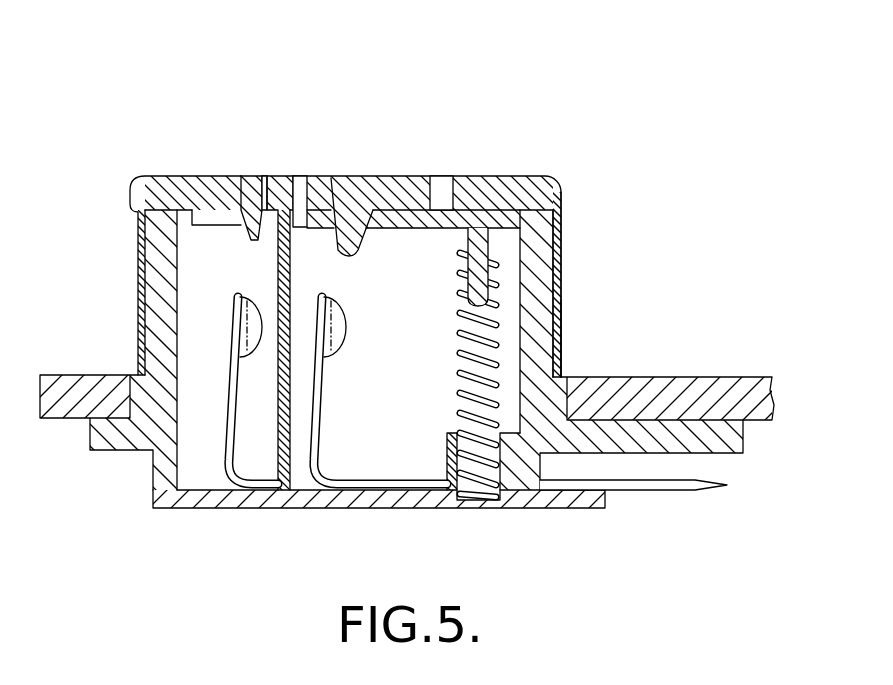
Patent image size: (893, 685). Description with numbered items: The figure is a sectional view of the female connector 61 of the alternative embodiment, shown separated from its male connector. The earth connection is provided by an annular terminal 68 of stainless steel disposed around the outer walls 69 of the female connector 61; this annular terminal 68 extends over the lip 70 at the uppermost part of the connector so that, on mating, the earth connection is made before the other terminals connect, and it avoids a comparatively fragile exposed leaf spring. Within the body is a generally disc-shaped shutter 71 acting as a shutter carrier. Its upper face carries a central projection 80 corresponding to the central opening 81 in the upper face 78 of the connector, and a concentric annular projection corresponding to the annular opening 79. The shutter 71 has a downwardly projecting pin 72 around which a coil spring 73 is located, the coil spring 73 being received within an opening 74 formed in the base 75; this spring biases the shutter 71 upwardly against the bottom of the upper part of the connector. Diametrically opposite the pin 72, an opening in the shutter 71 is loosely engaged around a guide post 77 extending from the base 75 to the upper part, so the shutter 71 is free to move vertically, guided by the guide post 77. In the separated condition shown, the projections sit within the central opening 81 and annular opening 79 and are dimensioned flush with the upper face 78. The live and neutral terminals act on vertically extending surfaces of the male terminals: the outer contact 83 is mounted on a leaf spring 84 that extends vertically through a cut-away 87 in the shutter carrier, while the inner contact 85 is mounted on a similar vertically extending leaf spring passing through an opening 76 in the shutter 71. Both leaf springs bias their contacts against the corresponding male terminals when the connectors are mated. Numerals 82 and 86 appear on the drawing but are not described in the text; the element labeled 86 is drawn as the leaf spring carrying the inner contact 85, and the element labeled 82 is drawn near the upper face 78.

The female connector 61 is at (600, 251).
The annular terminal 68 is at (558, 336).
The outer walls 69 is at (537, 305).
The lip 70 is at (558, 192).
The shutter 71 is at (441, 207).
The pin 72 is at (470, 282).
The coil spring 73 is at (460, 395).
The opening 74 is at (495, 476).
The base 75 is at (428, 497).
The opening 76 is at (303, 217).
The guide post 77 is at (277, 453).
The upper face 78 is at (200, 176).
The annular opening 79 is at (233, 200).
The central projection 80 is at (353, 192).
The central opening 81 is at (331, 207).
The latch block 82 is at (253, 175).
The outer contact 83 is at (247, 331).
The leaf spring 84 is at (227, 443).
The inner contact 85 is at (340, 318).
The second contact spring leg 86 is at (313, 458).
The cut-away 87 is at (222, 220).